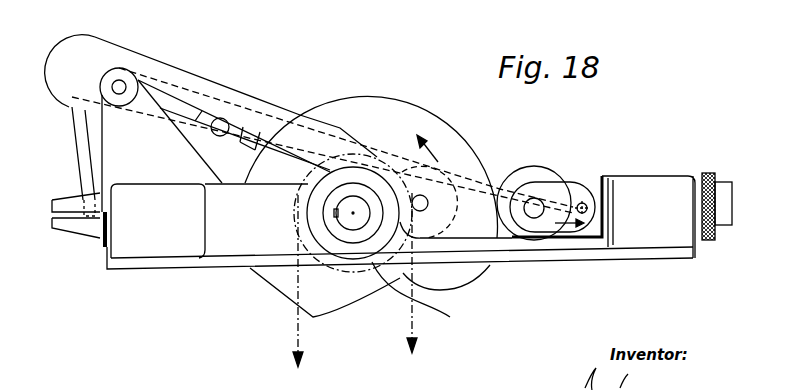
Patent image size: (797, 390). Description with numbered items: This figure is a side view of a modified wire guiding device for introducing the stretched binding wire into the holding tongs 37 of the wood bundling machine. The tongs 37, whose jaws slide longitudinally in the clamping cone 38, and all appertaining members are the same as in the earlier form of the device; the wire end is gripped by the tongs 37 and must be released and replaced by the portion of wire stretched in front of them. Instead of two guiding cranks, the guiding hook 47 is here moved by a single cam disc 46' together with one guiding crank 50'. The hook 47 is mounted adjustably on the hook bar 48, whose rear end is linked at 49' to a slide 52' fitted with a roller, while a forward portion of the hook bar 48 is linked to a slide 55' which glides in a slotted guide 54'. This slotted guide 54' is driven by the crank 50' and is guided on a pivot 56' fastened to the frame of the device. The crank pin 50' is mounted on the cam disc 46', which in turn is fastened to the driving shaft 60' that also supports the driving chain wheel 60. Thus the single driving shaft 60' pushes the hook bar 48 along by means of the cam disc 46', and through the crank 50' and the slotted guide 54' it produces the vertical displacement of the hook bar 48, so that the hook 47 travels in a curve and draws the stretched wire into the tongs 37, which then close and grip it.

The slotted guide 54' is at (309, 113).
The hook bar 48 is at (190, 116).
The slide 55' is at (245, 90).
The pivot 56' is at (133, 110).
The guiding hook 47 is at (79, 136).
The holding tongs 37 is at (67, 226).
The clamping cone 38 is at (100, 247).
The cam disc 46' is at (417, 206).
The driving shaft 60' is at (352, 260).
The driving chain wheel 60 is at (444, 273).
The guiding crank 50' is at (462, 184).
The slide 52' is at (566, 186).
The link pivot 49' is at (584, 191).